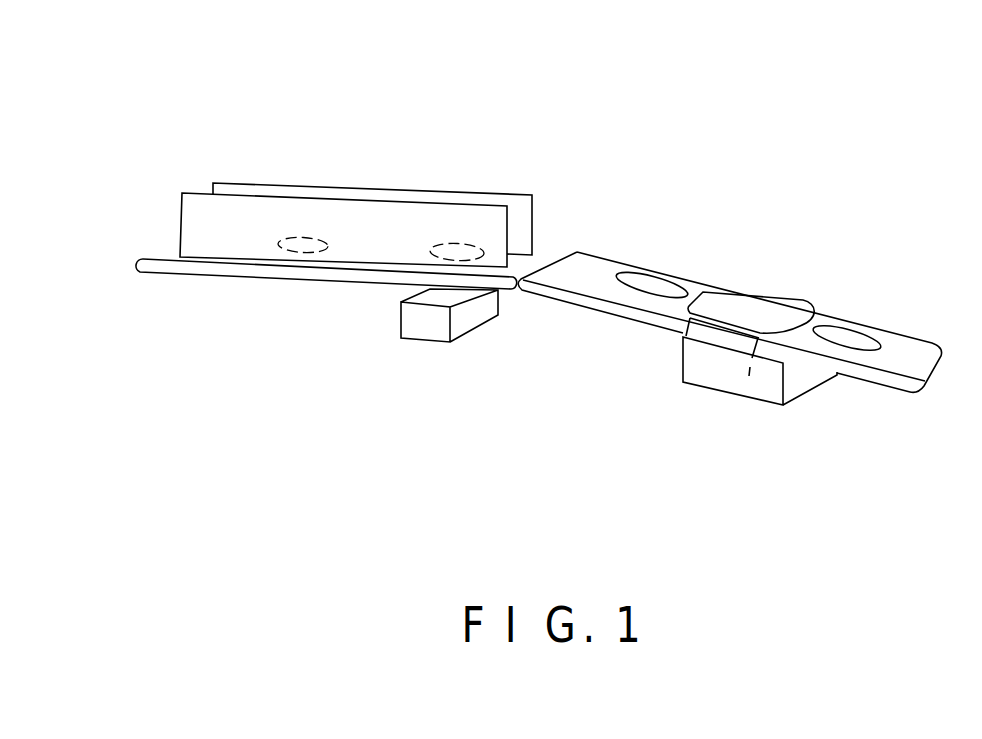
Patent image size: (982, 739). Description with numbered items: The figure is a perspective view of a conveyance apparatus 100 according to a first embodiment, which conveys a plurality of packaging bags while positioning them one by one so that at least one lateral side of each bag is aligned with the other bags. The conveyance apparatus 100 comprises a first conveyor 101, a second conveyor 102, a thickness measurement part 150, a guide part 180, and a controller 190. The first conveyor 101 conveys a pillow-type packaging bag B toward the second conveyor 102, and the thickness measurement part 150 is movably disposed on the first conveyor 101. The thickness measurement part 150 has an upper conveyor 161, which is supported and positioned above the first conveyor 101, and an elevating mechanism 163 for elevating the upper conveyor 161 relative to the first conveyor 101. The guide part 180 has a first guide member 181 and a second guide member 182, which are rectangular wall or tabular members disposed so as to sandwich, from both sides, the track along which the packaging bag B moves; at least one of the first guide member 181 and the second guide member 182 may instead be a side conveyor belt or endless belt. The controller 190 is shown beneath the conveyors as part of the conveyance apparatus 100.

The conveyance apparatus 100 is at (488, 105).
The first conveyor 101 is at (904, 352).
The second conveyor 102 is at (167, 256).
The guide part 180 is at (357, 158).
The first guide member 181 is at (330, 212).
The second guide member 182 is at (254, 192).
The controller 190 is at (423, 330).
The thickness measurement part 150 is at (766, 277).
The upper conveyor 161 is at (786, 295).
The elevating mechanism 163 is at (717, 378).
The packaging bag B is at (651, 286).